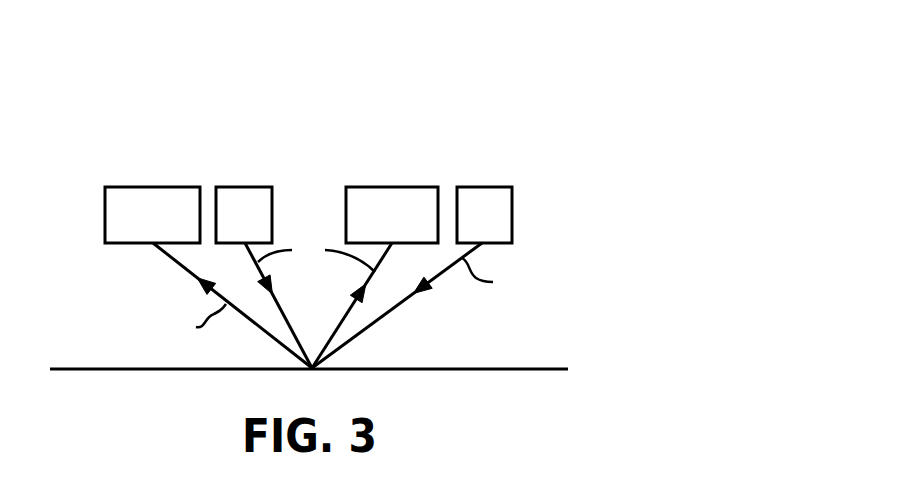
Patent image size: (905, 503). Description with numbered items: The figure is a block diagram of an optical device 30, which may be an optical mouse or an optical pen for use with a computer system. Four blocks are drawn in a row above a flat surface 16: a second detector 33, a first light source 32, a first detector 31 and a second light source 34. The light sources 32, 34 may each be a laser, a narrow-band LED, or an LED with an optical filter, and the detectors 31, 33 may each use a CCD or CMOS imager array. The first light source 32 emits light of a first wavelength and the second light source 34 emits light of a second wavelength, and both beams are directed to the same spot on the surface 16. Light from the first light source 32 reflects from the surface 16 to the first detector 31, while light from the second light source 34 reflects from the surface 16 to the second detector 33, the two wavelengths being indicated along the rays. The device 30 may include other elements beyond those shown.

The optical device 30 is at (324, 32).
The second detector 33 is at (133, 215).
The first light source 32 is at (244, 205).
The first detector 31 is at (392, 207).
The second light source 34 is at (493, 210).
The surface 16 is at (522, 368).